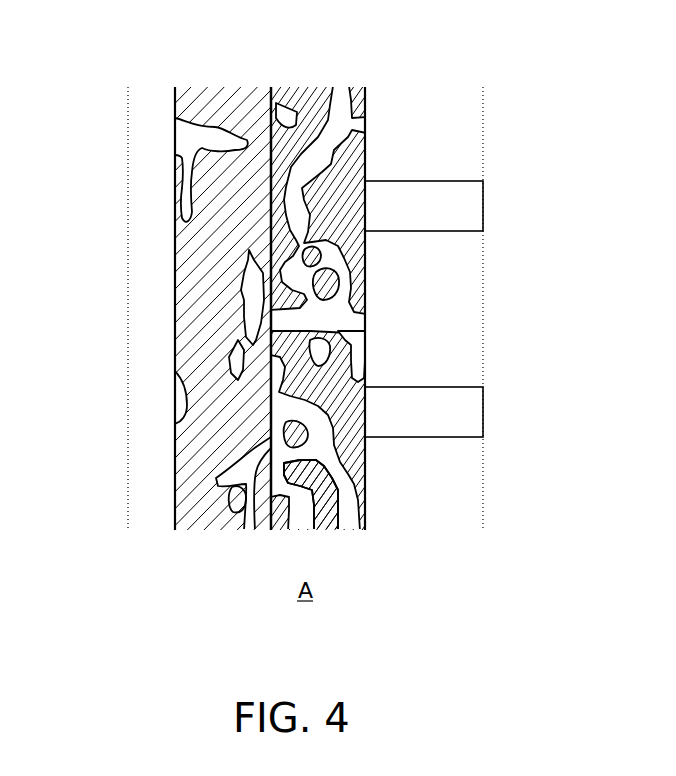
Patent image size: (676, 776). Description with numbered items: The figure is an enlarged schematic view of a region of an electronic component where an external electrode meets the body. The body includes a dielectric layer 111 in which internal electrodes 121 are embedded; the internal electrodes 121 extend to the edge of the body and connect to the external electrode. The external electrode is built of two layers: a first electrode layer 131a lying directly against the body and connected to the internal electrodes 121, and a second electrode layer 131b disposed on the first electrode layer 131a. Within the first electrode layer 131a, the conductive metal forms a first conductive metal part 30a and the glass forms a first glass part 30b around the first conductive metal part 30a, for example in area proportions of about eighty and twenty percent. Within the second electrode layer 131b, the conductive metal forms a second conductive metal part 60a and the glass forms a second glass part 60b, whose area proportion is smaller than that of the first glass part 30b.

The first conductive metal part 30a is at (340, 136).
The first glass part 30b is at (320, 150).
The second conductive metal part 60a is at (200, 505).
The second glass part 60b is at (257, 470).
The dielectric layer 111 is at (468, 311).
The internal electrode 121 is at (468, 207).
The first electrode layer 131a is at (367, 113).
The second electrode layer 131b is at (174, 170).